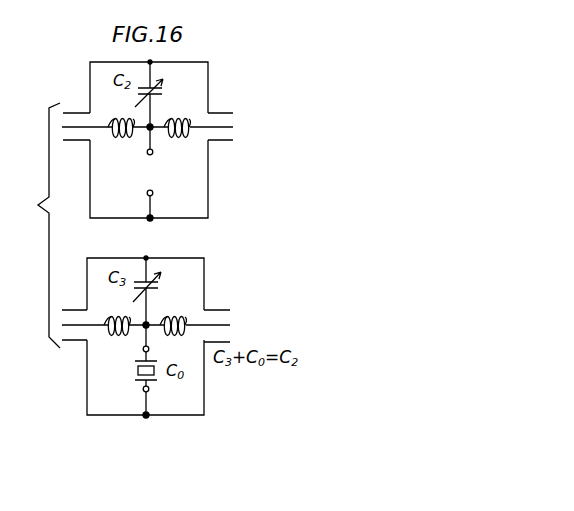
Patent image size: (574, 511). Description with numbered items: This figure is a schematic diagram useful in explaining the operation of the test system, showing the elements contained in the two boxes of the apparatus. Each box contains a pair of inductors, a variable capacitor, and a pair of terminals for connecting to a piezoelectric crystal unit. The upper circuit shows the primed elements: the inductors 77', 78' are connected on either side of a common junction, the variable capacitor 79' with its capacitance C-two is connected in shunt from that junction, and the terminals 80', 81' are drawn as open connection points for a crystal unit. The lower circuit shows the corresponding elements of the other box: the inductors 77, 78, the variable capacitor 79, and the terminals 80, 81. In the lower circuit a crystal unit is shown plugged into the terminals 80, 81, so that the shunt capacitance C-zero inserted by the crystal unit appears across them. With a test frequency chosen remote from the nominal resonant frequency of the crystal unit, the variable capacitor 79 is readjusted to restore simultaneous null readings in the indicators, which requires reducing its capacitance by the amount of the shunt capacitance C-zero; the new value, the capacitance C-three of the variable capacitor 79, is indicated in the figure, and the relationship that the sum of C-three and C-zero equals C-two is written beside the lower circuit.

The inductor 78' is at (91, 102).
The inductor 77' is at (208, 109).
The variable capacitor 79' is at (192, 83).
The terminal 81' is at (128, 163).
The terminal 80' is at (169, 181).
The inductor 78 is at (93, 301).
The inductor 77 is at (201, 306).
The variable capacitor 79 is at (182, 270).
The terminal 81 is at (121, 356).
The terminal 80 is at (121, 395).